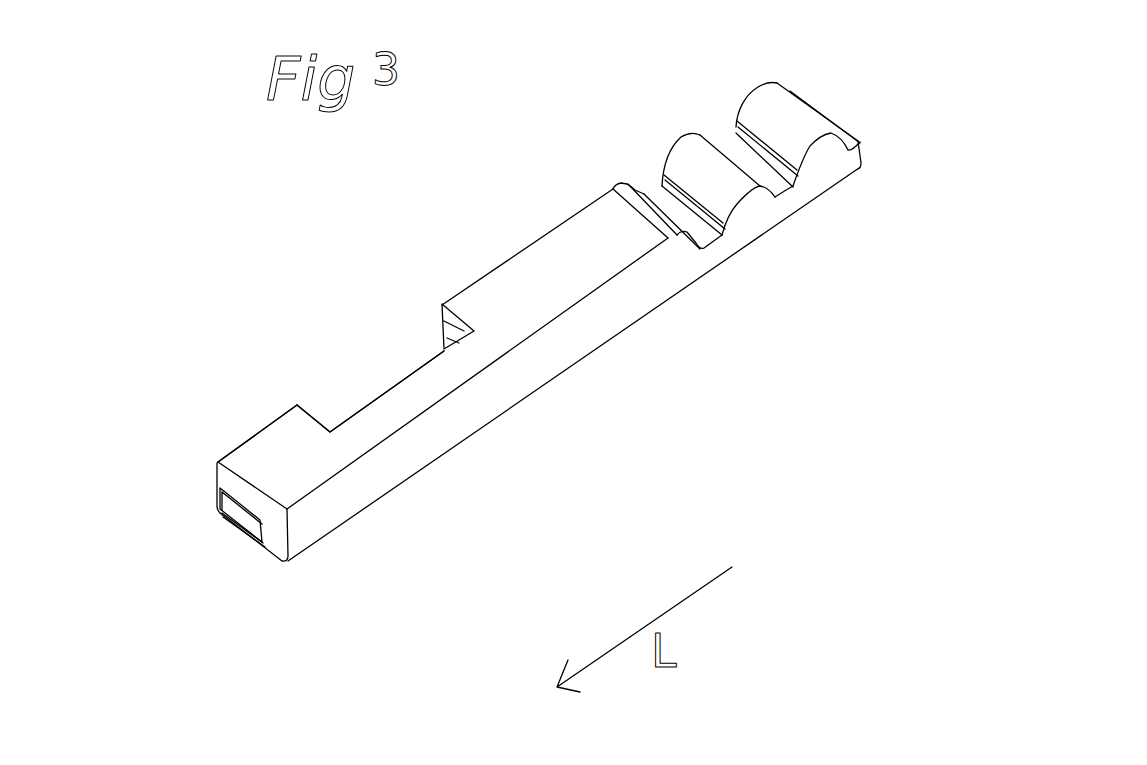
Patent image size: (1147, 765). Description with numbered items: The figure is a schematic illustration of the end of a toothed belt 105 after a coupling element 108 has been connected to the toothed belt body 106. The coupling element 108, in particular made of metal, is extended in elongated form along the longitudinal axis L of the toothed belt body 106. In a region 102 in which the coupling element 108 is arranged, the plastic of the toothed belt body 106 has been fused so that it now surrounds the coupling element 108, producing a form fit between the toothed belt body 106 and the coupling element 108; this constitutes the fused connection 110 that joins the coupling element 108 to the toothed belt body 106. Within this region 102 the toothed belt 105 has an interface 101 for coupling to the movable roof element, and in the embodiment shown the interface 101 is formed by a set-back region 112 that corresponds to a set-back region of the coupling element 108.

The interface 101 is at (349, 367).
The region 102 is at (298, 572).
The toothed belt 105 is at (1005, 120).
The toothed belt body 106 is at (823, 180).
The coupling element 108 is at (442, 331).
The fused connection 110 is at (184, 437).
The set-back region 112 is at (394, 356).